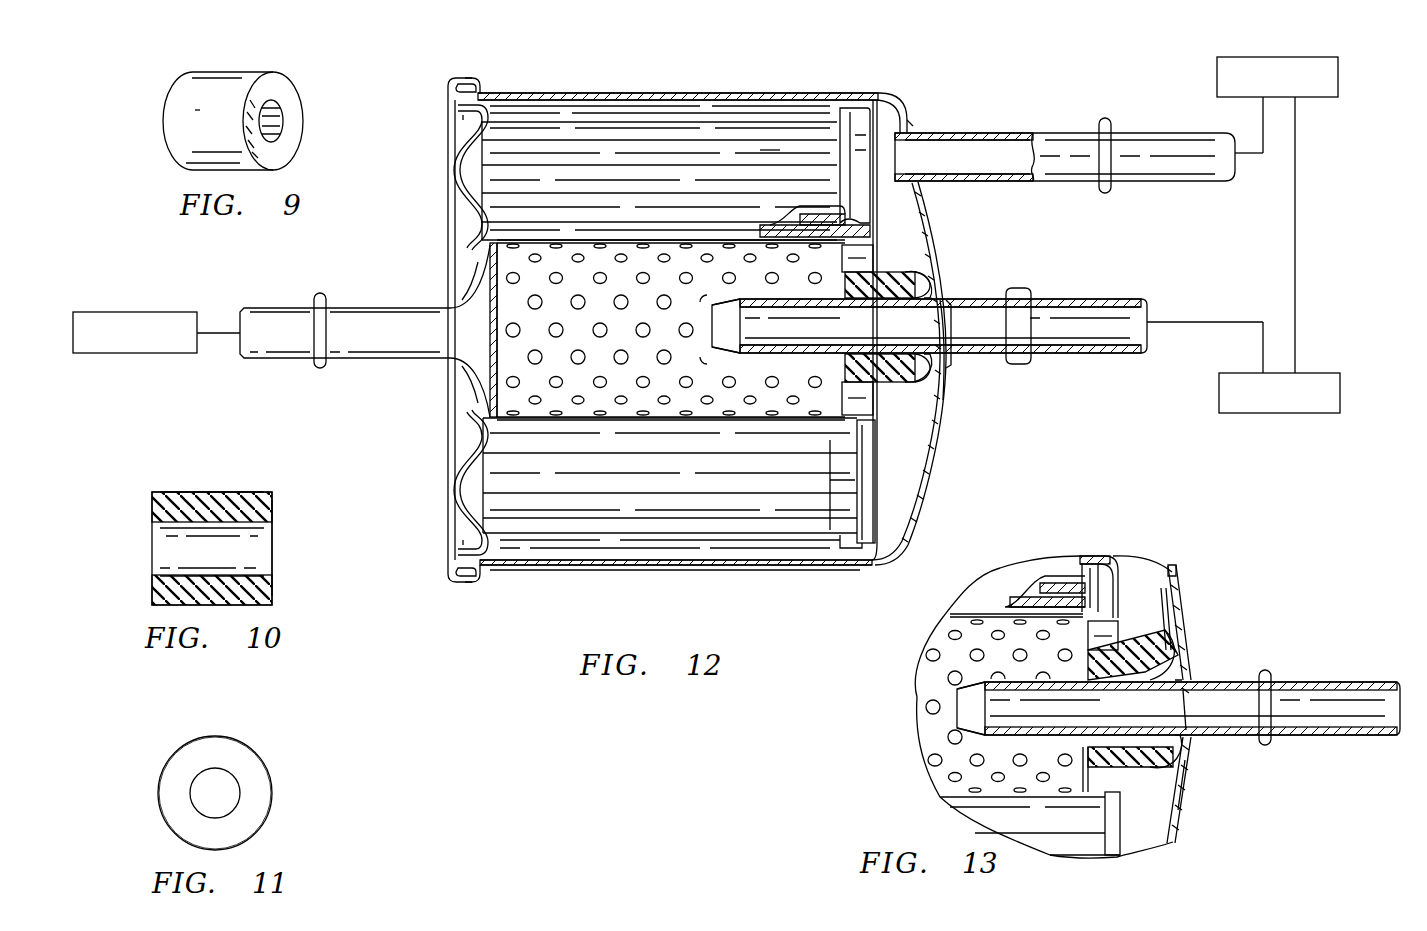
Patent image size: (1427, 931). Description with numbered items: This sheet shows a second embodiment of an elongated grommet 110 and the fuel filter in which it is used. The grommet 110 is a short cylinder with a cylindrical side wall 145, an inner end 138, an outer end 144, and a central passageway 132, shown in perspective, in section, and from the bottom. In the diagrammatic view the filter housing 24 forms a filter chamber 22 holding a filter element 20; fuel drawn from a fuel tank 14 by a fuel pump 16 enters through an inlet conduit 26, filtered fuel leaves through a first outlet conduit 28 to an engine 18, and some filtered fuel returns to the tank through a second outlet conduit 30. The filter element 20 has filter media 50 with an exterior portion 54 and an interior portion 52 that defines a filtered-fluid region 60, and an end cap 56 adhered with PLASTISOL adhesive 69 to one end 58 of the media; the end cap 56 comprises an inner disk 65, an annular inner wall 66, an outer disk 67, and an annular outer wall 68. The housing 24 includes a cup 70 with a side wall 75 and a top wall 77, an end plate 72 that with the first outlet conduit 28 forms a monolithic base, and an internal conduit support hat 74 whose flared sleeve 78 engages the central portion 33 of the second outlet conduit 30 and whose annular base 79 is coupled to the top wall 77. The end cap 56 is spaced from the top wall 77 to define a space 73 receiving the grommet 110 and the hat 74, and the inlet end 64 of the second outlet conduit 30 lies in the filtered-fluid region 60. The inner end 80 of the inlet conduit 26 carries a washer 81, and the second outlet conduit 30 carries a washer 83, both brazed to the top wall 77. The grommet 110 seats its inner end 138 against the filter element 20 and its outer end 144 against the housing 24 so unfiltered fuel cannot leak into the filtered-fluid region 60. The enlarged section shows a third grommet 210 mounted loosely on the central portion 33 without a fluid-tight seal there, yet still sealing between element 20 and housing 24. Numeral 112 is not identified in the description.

In FIG. 12, the fuel tank 14 is at (1275, 413).
In FIG. 12, the fuel pump 16 is at (1217, 78).
In FIG. 12, the engine 18 is at (136, 312).
In FIG. 12, the filter element 20 is at (653, 112).
In FIG. 13, the filter element 20 is at (1063, 556).
In FIG. 12, the filter chamber 22 is at (901, 488).
In FIG. 13, the filter chamber 22 is at (1147, 838).
In FIG. 12, the filter housing 24 is at (665, 570).
In FIG. 12, the inlet conduit 26 is at (1064, 124).
In FIG. 12, the first outlet conduit 28 is at (362, 299).
In FIG. 12, the second outlet conduit 30 is at (1079, 294).
In FIG. 12, the central portion of second outlet conduit 33 is at (891, 341).
In FIG. 13, the central portion of second outlet conduit 33 is at (1135, 722).
In FIG. 12, the filter media 50 is at (594, 140).
In FIG. 12, the interior portion 52 is at (522, 250).
In FIG. 12, the exterior portion 54 is at (547, 118).
In FIG. 12, the end cap 56 is at (857, 107).
In FIG. 12, the end of filter media 58 is at (790, 135).
In FIG. 12, the filtered-fluid region 60 is at (522, 391).
In FIG. 12, the inlet end of second outlet conduit 64 is at (720, 306).
In FIG. 12, the inner disk 65 is at (845, 366).
In FIG. 13, the inner disk 65 is at (1088, 750).
In FIG. 12, the annular inner wall 66 is at (876, 412).
In FIG. 13, the annular inner wall 66 is at (1110, 786).
In FIG. 12, the outer disk 67 is at (890, 548).
In FIG. 12, the annular outer wall 68 is at (849, 547).
In FIG. 12, the PLASTISOL adhesive 69 is at (467, 512).
In FIG. 12, the cup 70 is at (577, 570).
In FIG. 12, the end plate 72 is at (458, 462).
In FIG. 12, the space 73 is at (884, 120).
In FIG. 12, the internal conduit support hat 74 is at (930, 194).
In FIG. 13, the internal conduit support hat 74 is at (1160, 595).
In FIG. 12, the side wall 75 is at (520, 578).
In FIG. 12, the top wall 77 is at (940, 420).
In FIG. 13, the top wall 77 is at (1182, 814).
In FIG. 12, the flared sleeve 78 is at (920, 354).
In FIG. 13, the flared sleeve 78 is at (1175, 735).
In FIG. 12, the annular base 79 is at (922, 452).
In FIG. 12, the inner end of inlet conduit 80 is at (917, 160).
In FIG. 12, the washer 81 is at (913, 126).
In FIG. 12, the washer 83 is at (946, 368).
In FIG. 13, the washer 83 is at (1188, 764).
In FIG. 9, the grommet 110 is at (152, 96).
In FIG. 10, the grommet 110 is at (144, 550).
In FIG. 11, the grommet 110 is at (289, 781).
In FIG. 12, the grommet 110 is at (905, 262).
In FIG. 12, the housing side wall 112 is at (710, 576).
In FIG. 9, the passageway 132 is at (272, 128).
In FIG. 10, the passageway 132 is at (264, 570).
In FIG. 11, the passageway 132 is at (200, 800).
In FIG. 10, the inner end 138 is at (152, 512).
In FIG. 11, the inner end 138 is at (237, 755).
In FIG. 12, the inner end 138 is at (845, 285).
In FIG. 13, the inner end 138 is at (1085, 660).
In FIG. 9, the outer end 144 is at (284, 155).
In FIG. 10, the outer end 144 is at (272, 503).
In FIG. 12, the outer end 144 is at (940, 288).
In FIG. 13, the outer end 144 is at (1181, 661).
In FIG. 9, the cylindrical side wall 145 is at (176, 137).
In FIG. 10, the cylindrical side wall 145 is at (184, 491).
In FIG. 13, the grommet 210 is at (1175, 612).